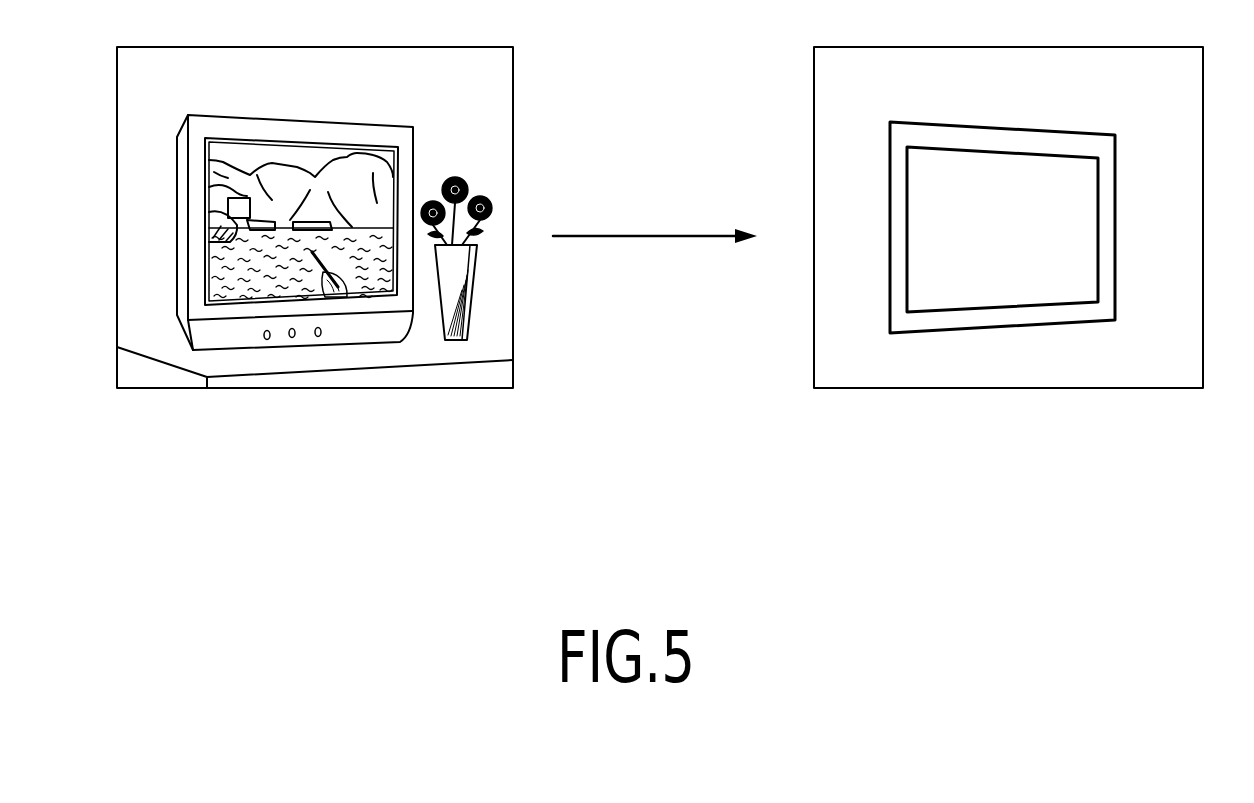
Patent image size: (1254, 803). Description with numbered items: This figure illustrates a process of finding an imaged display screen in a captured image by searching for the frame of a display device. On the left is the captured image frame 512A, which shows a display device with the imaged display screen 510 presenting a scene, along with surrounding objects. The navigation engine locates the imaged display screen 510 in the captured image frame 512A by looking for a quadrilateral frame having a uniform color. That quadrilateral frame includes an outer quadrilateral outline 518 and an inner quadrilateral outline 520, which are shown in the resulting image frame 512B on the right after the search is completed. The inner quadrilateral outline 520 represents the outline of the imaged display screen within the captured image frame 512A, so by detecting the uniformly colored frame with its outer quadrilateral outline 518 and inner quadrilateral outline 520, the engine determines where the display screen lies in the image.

The imaged display screen 510 is at (258, 157).
The outer quadrilateral outline 518 is at (1118, 180).
The inner quadrilateral outline 520 is at (1110, 223).
The captured image frame 512A is at (432, 388).
The resulting image frame 512B is at (1062, 390).